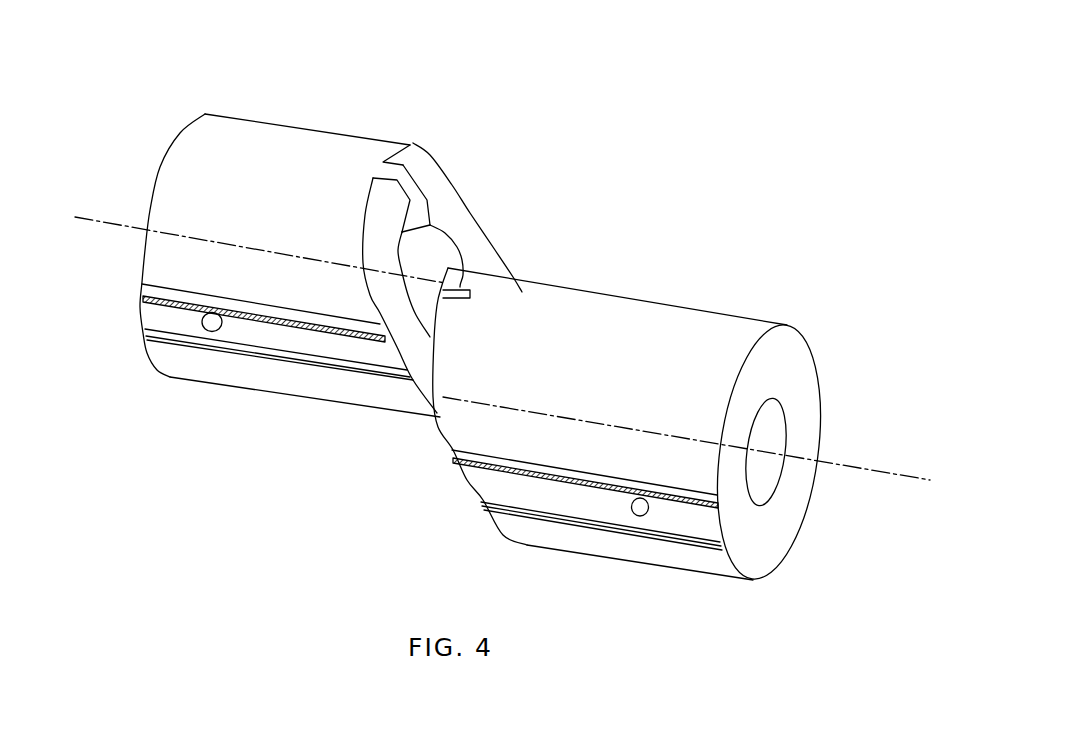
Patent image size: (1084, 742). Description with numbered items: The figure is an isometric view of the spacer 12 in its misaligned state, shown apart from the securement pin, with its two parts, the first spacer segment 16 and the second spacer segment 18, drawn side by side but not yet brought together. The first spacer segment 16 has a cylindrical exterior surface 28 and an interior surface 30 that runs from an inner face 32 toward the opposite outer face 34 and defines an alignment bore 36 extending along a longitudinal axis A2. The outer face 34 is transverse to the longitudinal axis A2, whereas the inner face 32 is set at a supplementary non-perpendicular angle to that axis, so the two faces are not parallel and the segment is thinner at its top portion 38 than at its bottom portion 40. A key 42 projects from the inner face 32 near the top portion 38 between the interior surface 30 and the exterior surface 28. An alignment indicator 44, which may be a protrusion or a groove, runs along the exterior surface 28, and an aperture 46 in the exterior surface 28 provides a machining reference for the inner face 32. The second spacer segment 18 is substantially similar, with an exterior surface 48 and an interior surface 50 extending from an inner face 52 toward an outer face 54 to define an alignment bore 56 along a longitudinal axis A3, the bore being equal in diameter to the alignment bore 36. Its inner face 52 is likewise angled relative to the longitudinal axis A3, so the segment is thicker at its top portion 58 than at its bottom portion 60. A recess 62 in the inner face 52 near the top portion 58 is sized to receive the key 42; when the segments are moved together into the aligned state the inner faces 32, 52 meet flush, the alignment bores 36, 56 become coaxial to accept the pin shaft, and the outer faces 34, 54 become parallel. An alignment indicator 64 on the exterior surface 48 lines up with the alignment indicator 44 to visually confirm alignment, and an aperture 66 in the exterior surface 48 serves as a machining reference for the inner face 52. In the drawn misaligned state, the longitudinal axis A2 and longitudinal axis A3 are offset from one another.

The spacer 12 is at (596, 137).
The first spacer segment 16 is at (413, 140).
The second spacer segment 18 is at (692, 300).
The exterior surface 28 is at (356, 140).
The interior surface 30 is at (428, 257).
The inner face 32 is at (459, 190).
The outer face 34 is at (165, 166).
The alignment bore 36 is at (423, 304).
The top portion 38 is at (236, 118).
The bottom portion 40 is at (276, 392).
The key 42 is at (426, 161).
The alignment indicator 44 is at (290, 318).
The aperture 46 is at (214, 312).
The exterior surface 48 is at (747, 322).
The interior surface 50 is at (757, 497).
The inner face 52 is at (440, 428).
The outer face 54 is at (806, 380).
The alignment bore 56 is at (771, 423).
The top portion 58 is at (592, 294).
The bottom portion 60 is at (666, 566).
The recess 62 is at (451, 282).
The alignment indicator 64 is at (508, 466).
The aperture 66 is at (638, 497).
The longitudinal axis A2 is at (112, 225).
The longitudinal axis A3 is at (883, 476).